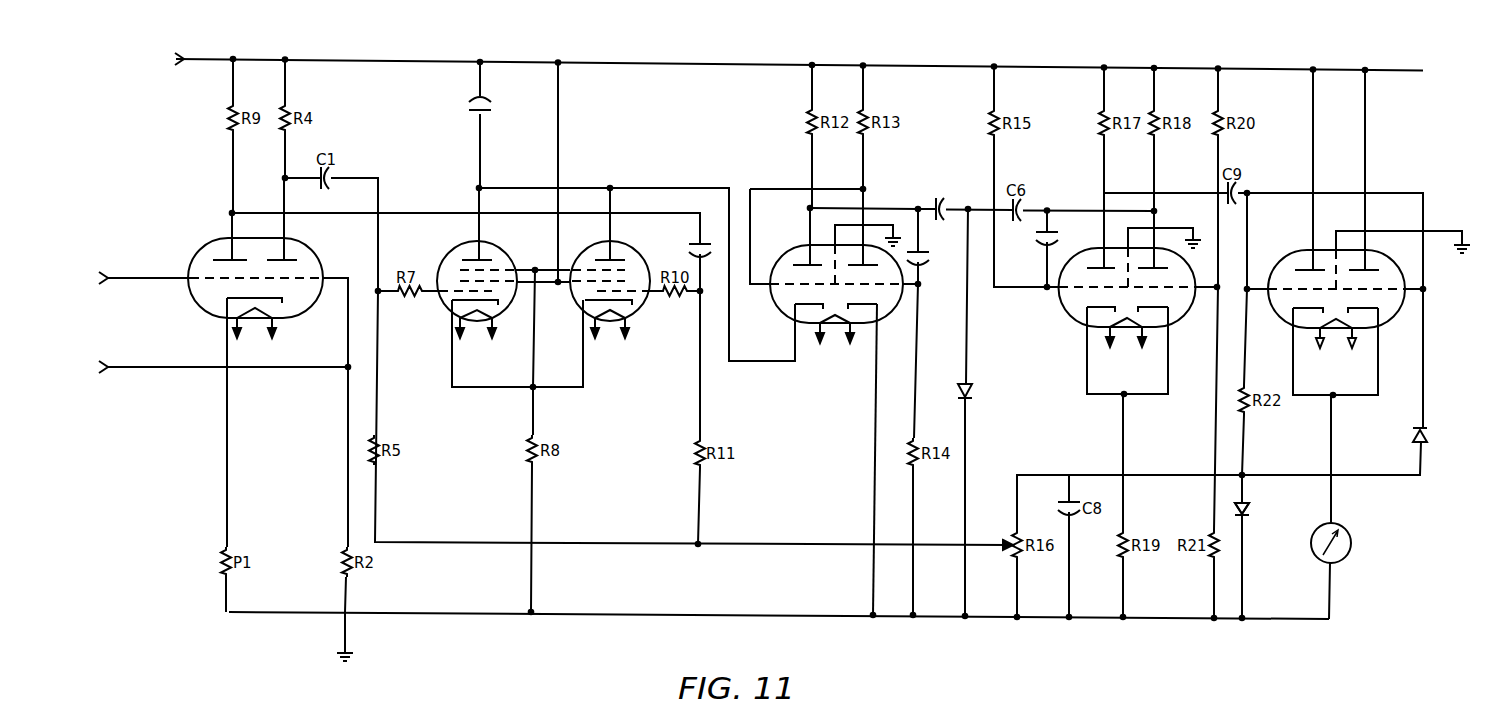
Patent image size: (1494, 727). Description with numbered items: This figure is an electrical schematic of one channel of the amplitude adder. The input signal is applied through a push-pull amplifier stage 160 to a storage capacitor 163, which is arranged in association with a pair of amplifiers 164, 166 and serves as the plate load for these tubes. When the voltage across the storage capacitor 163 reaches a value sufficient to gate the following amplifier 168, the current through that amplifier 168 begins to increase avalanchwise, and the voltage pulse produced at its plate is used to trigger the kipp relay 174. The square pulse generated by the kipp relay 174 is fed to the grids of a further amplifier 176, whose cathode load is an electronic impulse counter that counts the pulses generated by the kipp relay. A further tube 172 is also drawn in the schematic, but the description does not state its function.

The push-pull amplifier stage 160 is at (193, 300).
The storage capacitor 163 is at (488, 112).
The amplifier 164 is at (438, 299).
The amplifier 166 is at (642, 318).
The amplifier 168 is at (802, 328).
The twin triode tube 172 is at (1068, 311).
The kipp relay 174 is at (975, 396).
The amplifier 176 is at (1397, 312).